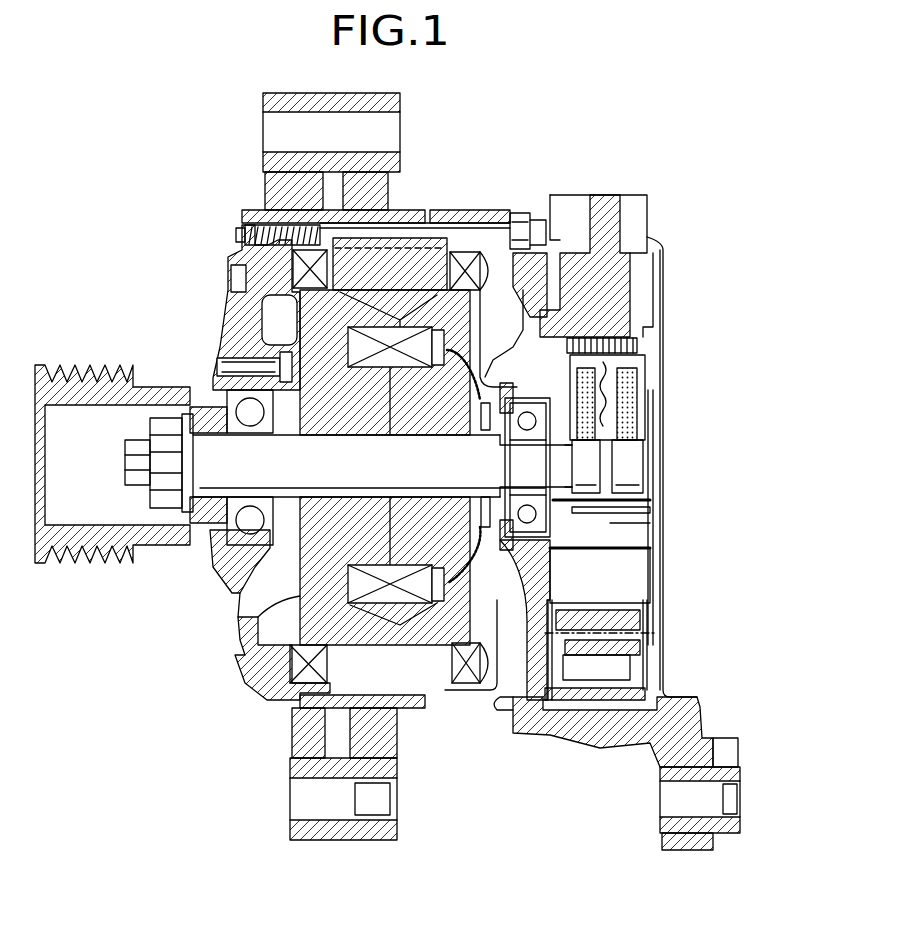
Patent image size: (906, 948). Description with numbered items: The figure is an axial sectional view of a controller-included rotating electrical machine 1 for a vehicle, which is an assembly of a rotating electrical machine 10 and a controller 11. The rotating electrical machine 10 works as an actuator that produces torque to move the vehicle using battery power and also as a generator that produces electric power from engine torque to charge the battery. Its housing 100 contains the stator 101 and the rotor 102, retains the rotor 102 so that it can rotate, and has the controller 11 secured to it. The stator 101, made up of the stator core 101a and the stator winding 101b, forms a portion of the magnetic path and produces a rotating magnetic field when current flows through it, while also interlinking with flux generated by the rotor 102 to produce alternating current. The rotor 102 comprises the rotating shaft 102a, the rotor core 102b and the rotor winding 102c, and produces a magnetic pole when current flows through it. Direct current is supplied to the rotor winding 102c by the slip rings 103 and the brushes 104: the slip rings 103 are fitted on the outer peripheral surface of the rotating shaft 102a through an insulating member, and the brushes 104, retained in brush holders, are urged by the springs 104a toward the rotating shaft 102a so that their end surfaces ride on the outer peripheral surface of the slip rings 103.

The controller-included rotating electrical machine 1 is at (737, 150).
The rotating electrical machine 10 is at (227, 322).
The controller 11 is at (663, 297).
The housing 100 is at (273, 697).
The stator 101 is at (395, 236).
The stator core 101a is at (428, 238).
The stator winding 101b is at (300, 263).
The rotor 102 is at (303, 613).
The rotating shaft 102a is at (240, 458).
The rotor core 102b is at (268, 677).
The rotor winding 102c is at (437, 700).
The slip rings 103 is at (586, 485).
The brushes 104 is at (600, 430).
The springs 104a is at (640, 362).